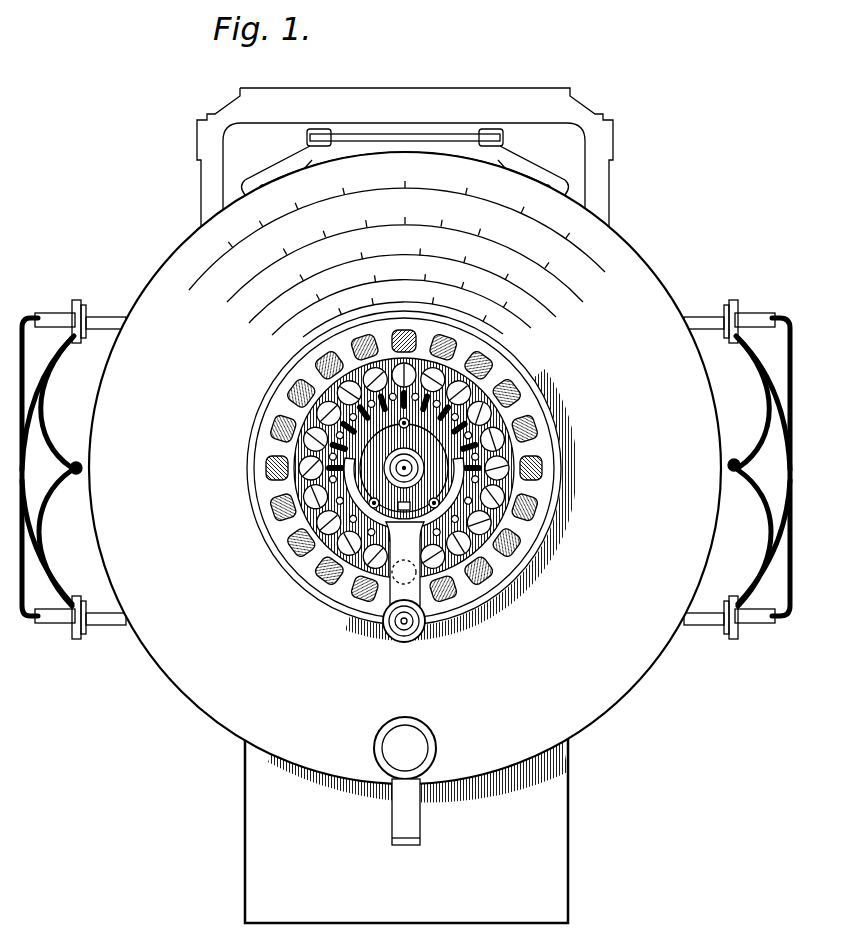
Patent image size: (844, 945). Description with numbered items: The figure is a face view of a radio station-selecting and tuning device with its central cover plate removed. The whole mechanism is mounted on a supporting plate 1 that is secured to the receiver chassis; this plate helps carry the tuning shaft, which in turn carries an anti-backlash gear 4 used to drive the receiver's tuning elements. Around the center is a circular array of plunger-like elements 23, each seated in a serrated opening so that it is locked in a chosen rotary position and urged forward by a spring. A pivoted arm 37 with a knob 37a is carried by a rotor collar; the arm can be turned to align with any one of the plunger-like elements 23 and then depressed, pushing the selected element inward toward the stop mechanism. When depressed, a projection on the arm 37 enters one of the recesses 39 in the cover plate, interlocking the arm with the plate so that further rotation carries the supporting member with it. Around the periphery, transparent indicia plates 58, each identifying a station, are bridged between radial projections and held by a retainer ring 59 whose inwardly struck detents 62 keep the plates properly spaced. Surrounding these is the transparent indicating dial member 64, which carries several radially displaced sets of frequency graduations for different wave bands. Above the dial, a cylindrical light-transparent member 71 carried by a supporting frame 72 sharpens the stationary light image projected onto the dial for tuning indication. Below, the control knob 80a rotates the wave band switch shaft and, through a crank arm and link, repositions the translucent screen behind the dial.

The supporting plate 1 is at (568, 806).
The gear 4 is at (404, 334).
The plunger-like element 23 is at (506, 467).
The pivoted arm 37 is at (397, 588).
The knob 37a is at (428, 636).
The recess 39 is at (506, 419).
The transparent indicia plate 58 is at (495, 352).
The retainer ring 59 is at (503, 366).
The detent 62 is at (537, 524).
The indicating dial member 64 is at (606, 228).
The light-transparent member 71 is at (427, 136).
The supporting frame 72 is at (608, 133).
The control knob 80a is at (430, 748).